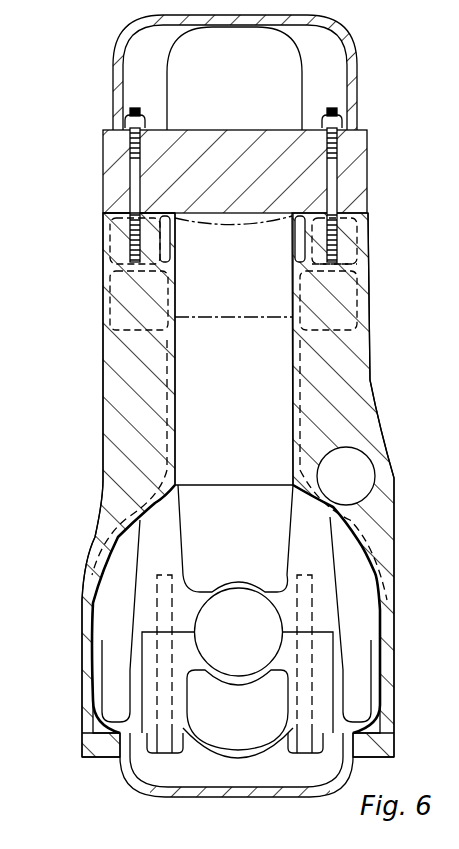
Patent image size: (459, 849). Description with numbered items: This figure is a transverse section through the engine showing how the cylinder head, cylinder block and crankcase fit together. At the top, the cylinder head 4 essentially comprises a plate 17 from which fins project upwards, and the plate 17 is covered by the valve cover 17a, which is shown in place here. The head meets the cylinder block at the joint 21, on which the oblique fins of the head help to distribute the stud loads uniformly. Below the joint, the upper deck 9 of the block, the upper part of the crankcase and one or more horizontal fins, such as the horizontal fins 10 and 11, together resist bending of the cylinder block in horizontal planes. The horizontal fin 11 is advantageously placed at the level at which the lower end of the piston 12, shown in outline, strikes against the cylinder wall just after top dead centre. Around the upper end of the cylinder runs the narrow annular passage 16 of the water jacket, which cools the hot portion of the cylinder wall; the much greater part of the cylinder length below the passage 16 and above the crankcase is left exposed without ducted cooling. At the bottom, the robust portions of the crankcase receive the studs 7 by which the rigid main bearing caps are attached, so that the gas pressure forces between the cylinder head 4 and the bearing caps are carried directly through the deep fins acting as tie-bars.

The cylinder head 4 is at (374, 171).
The studs 7 is at (297, 697).
The upper deck 9 is at (360, 216).
The horizontal fin 10 is at (357, 267).
The horizontal fin 11 is at (357, 330).
The piston 12 is at (218, 318).
The passage 16 is at (298, 238).
The plate 17 is at (240, 212).
The valve cover 17a is at (357, 63).
The joint 21 is at (103, 215).